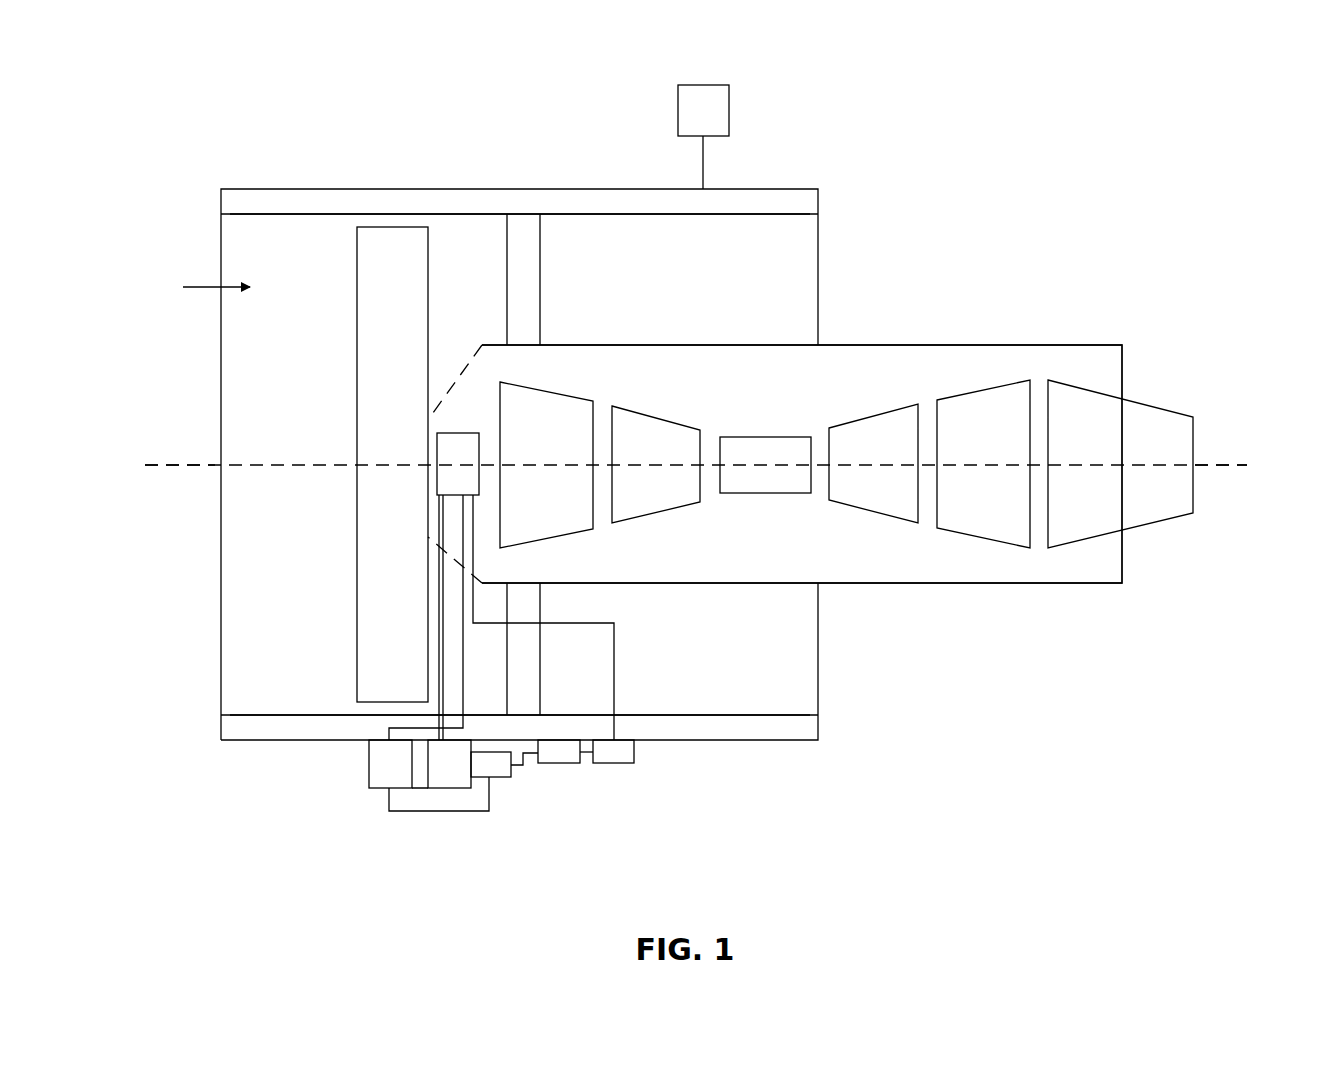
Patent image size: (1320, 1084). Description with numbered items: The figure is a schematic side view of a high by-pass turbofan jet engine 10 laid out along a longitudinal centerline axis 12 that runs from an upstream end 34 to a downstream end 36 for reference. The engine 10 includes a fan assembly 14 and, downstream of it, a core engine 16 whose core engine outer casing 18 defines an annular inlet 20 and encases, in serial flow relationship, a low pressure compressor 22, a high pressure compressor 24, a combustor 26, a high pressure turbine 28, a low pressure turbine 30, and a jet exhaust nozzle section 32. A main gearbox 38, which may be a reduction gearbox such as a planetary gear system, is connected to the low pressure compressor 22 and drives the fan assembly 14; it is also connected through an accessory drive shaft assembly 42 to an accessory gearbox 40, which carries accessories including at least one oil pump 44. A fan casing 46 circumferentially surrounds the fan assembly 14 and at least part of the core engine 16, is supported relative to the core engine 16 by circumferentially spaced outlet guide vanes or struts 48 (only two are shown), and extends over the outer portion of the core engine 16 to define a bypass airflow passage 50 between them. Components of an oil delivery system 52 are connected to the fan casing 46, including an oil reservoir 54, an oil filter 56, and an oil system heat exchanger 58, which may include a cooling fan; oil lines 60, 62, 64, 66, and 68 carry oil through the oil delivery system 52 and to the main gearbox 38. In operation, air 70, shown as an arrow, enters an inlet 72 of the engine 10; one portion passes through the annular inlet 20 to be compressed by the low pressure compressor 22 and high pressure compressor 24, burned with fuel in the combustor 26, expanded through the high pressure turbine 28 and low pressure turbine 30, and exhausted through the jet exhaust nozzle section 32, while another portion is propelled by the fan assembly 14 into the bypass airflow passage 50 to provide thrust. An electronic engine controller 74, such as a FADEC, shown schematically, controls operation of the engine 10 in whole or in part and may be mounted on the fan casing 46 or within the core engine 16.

The engine 10 is at (966, 68).
The longitudinal centerline axis 12 is at (190, 463).
The fan assembly 14 is at (376, 275).
The core engine 16 is at (899, 362).
The core engine outer casing 18 is at (838, 336).
The annular inlet 20 is at (447, 378).
The low pressure compressor 22 is at (528, 383).
The high pressure compressor 24 is at (640, 410).
The combustor 26 is at (743, 436).
The high pressure turbine 28 is at (880, 413).
The low pressure turbine 30 is at (1015, 380).
The jet exhaust nozzle section 32 is at (1148, 403).
The upstream end 34 is at (138, 479).
The downstream end 36 is at (1263, 479).
The main gearbox 38 is at (440, 487).
The accessory gearbox 40 is at (445, 788).
The accessory drive shaft assembly 42 is at (437, 595).
The oil pump 44 is at (495, 777).
The fan casing 46 is at (280, 189).
The struts 48 is at (531, 268).
The bypass airflow passage 50 is at (706, 292).
The oil delivery system 52 is at (566, 852).
The oil reservoir 54 is at (368, 775).
The oil filter 56 is at (565, 763).
The oil system heat exchanger 58 is at (634, 752).
The oil line 60 is at (420, 812).
The oil line 62 is at (518, 765).
The oil line 64 is at (585, 763).
The oil line 66 is at (614, 697).
The oil line 68 is at (462, 643).
The air 70 is at (196, 287).
The inlet 72 is at (236, 612).
The electronic engine controller 74 is at (730, 110).